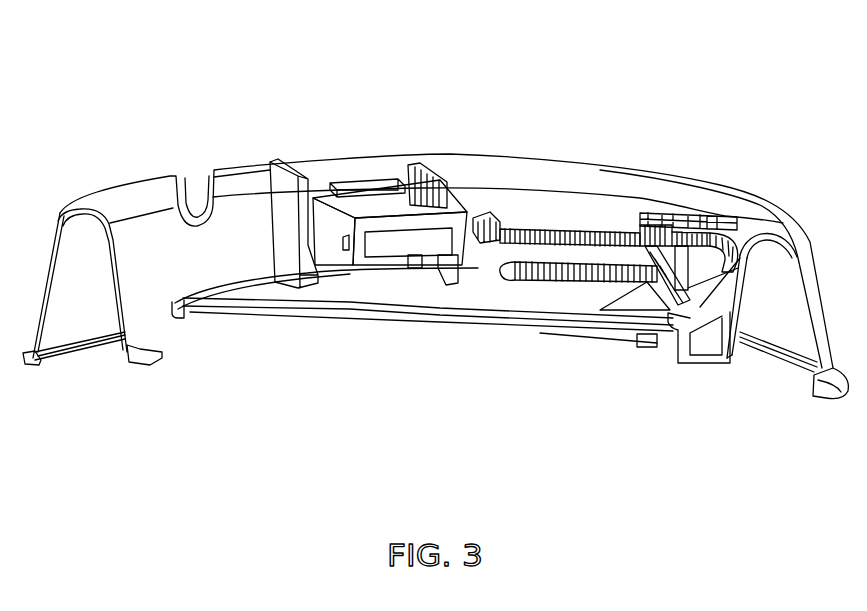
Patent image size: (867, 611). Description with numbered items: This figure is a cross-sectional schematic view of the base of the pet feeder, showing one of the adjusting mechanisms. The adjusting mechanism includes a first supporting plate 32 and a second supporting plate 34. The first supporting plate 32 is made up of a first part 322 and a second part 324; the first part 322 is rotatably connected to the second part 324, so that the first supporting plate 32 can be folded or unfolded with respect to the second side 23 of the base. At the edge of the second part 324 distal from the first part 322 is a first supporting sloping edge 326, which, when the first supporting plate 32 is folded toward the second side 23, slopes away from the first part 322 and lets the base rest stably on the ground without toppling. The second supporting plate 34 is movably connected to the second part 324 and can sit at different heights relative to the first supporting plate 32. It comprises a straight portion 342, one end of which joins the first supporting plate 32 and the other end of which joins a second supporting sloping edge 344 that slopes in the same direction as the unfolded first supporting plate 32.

The second side 23 is at (278, 292).
The first supporting plate 32 is at (735, 72).
The first part 322 is at (693, 215).
The second part 324 is at (553, 228).
The first supporting sloping edge 326 is at (357, 183).
The second supporting plate 34 is at (393, 247).
The straight portion 342 is at (573, 283).
The second supporting sloping edge 344 is at (657, 347).